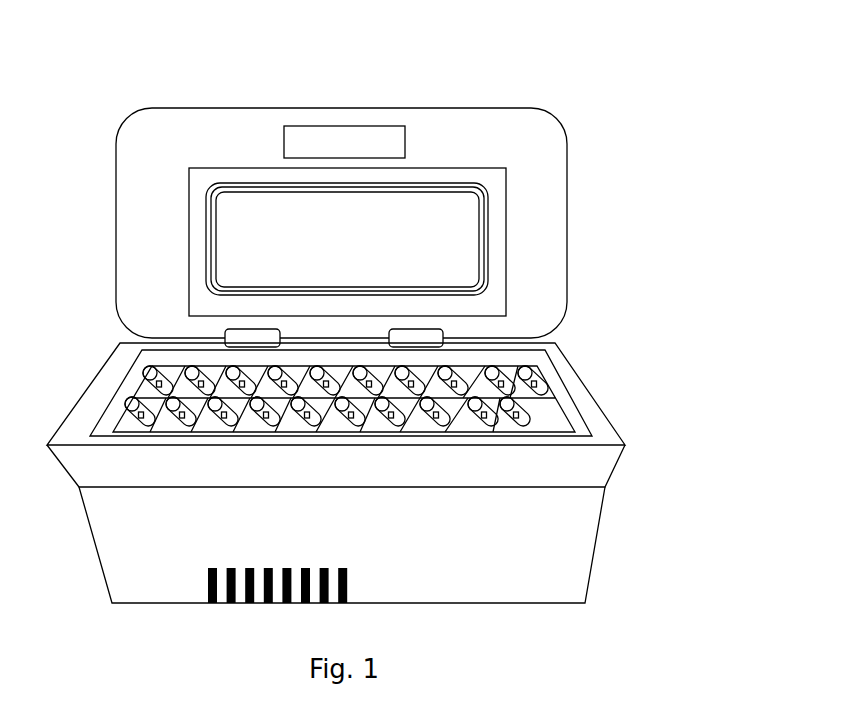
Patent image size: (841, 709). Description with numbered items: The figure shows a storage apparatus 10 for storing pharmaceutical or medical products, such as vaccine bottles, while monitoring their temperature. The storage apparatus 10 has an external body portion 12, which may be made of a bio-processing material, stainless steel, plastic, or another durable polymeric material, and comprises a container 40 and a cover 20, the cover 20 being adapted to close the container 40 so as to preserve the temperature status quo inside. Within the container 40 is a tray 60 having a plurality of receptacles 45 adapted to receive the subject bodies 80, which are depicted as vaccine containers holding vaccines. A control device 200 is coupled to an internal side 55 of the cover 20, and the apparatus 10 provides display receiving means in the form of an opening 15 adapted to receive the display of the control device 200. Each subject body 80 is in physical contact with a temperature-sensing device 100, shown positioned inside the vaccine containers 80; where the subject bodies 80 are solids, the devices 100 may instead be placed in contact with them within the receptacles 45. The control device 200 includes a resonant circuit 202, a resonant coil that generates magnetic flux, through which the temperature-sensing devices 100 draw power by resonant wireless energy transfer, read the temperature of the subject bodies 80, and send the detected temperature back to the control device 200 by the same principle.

The storage apparatus 10 is at (118, 83).
The external body portion 12 is at (655, 555).
The opening 15 is at (405, 143).
The cover 20 is at (567, 140).
The container 40 is at (138, 352).
The receptacles 45 is at (457, 422).
The internal side of the cover 55 is at (523, 120).
The tray 60 is at (555, 397).
The subject bodies 80 is at (533, 372).
The temperature-sensing device 100 is at (537, 383).
The control device 200 is at (243, 168).
The resonant circuit 202 is at (207, 210).